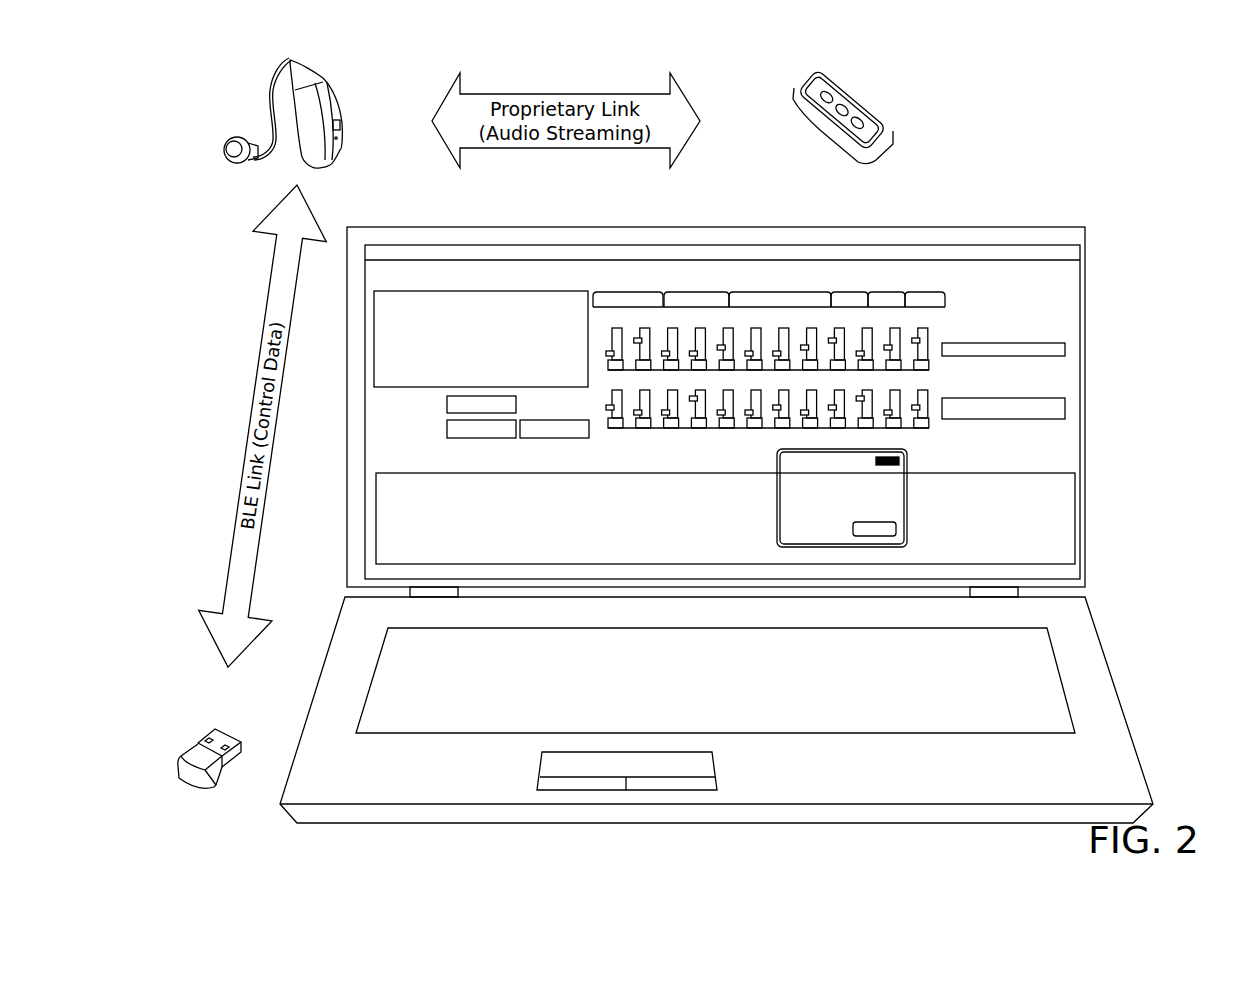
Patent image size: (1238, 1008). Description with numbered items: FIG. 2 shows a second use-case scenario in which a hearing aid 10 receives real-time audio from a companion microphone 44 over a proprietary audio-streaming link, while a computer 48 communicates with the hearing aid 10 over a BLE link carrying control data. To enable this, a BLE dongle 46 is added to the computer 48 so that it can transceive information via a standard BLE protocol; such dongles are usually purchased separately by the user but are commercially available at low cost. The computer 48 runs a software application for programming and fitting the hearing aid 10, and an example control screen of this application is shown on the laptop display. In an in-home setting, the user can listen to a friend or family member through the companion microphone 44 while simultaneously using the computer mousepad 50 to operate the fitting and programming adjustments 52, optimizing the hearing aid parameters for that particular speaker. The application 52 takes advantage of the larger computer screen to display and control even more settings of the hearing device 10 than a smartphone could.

The hearing aid 10 is at (295, 90).
The companion microphone 44 is at (868, 100).
The BLE dongle 46 is at (198, 742).
The computer 48 is at (925, 215).
The computer mousepad 50 is at (598, 772).
The fitting and programming adjustments 52 is at (1003, 317).